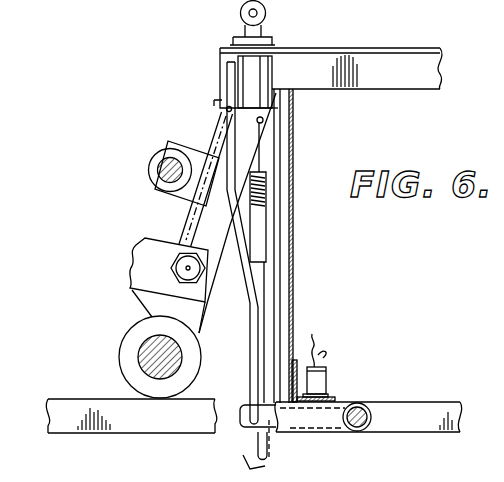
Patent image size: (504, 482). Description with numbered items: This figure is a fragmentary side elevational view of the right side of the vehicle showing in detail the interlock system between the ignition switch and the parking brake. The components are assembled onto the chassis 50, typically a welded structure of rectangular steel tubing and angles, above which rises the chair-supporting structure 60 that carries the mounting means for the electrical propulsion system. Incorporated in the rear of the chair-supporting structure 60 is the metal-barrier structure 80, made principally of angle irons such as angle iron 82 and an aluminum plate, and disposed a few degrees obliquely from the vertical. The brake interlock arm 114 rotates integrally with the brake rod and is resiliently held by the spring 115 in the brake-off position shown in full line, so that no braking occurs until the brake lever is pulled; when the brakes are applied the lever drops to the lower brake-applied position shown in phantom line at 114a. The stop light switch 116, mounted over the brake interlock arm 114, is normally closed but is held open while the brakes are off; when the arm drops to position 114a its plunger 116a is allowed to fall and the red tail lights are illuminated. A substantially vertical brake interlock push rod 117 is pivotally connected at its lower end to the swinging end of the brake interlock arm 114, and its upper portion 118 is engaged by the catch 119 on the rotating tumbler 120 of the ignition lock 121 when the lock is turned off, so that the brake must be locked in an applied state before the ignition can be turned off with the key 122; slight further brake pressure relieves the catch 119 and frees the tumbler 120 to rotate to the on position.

The key 122 is at (240, 13).
The ignition lock 121 is at (272, 68).
The catch 119 is at (217, 100).
The rotating tumbler 120 is at (274, 108).
The upper portion of brake interlock push rod 118 is at (224, 112).
The metal-barrier structure 80 is at (160, 216).
The angle iron 82 is at (145, 237).
The brake interlock push rod 117 is at (242, 232).
The spring 115 is at (262, 280).
The chair-supporting structure 60 is at (330, 300).
The chassis 50 is at (68, 392).
The stop light switch 116 is at (328, 386).
The plunger 116a is at (262, 449).
The brake interlock arm 114 is at (244, 426).
The brake-applied position of brake interlock lever 114a is at (266, 453).